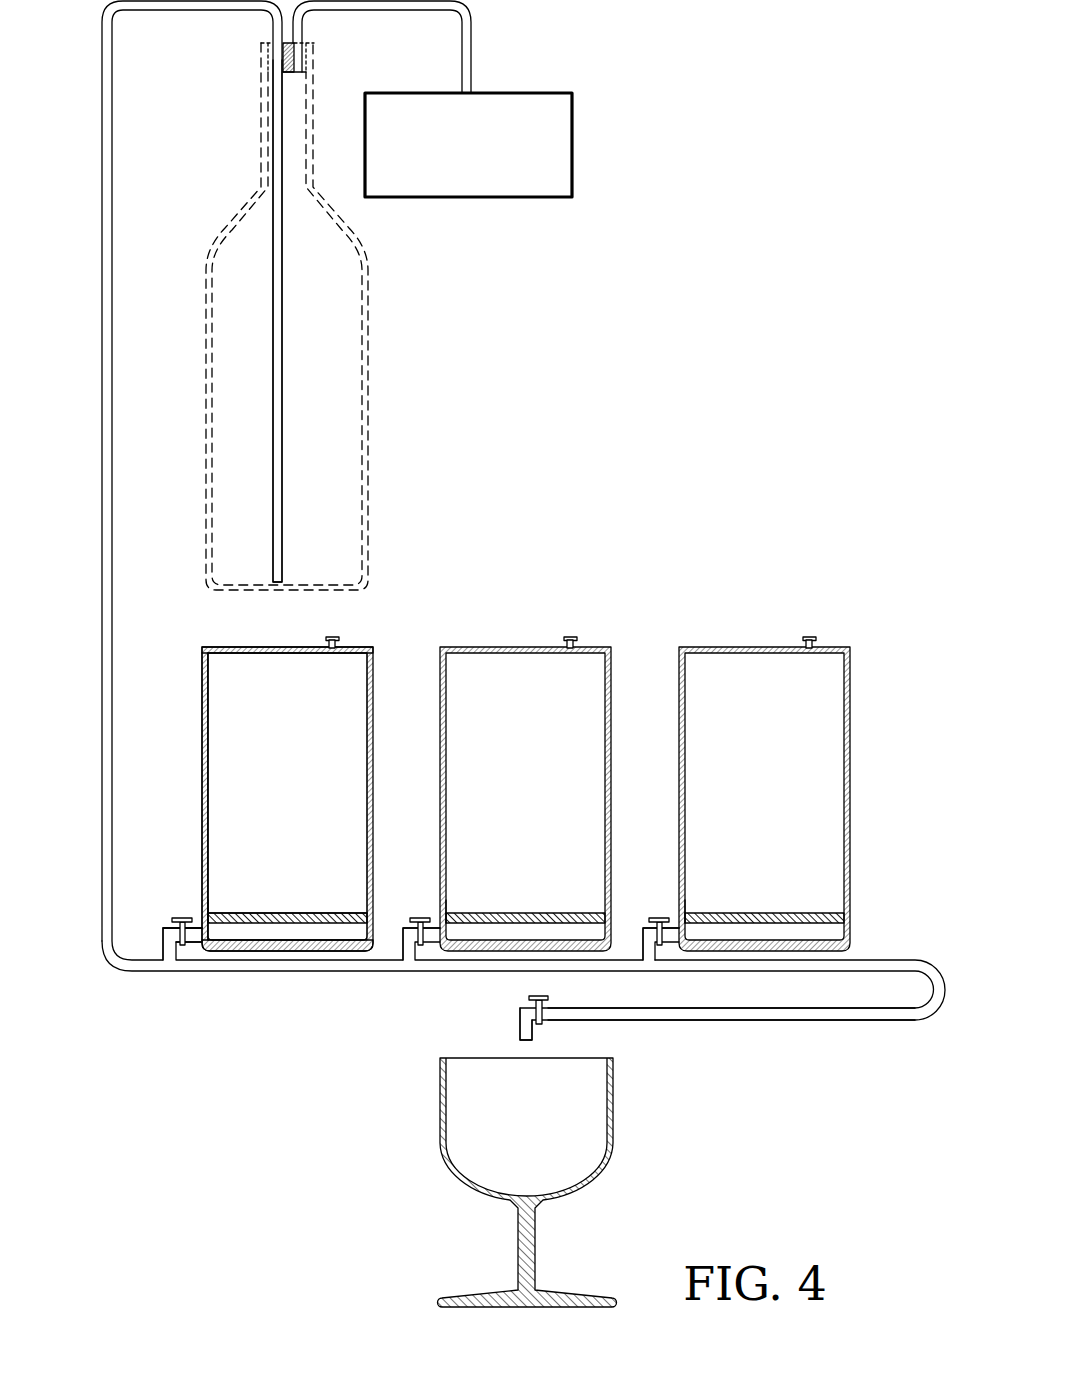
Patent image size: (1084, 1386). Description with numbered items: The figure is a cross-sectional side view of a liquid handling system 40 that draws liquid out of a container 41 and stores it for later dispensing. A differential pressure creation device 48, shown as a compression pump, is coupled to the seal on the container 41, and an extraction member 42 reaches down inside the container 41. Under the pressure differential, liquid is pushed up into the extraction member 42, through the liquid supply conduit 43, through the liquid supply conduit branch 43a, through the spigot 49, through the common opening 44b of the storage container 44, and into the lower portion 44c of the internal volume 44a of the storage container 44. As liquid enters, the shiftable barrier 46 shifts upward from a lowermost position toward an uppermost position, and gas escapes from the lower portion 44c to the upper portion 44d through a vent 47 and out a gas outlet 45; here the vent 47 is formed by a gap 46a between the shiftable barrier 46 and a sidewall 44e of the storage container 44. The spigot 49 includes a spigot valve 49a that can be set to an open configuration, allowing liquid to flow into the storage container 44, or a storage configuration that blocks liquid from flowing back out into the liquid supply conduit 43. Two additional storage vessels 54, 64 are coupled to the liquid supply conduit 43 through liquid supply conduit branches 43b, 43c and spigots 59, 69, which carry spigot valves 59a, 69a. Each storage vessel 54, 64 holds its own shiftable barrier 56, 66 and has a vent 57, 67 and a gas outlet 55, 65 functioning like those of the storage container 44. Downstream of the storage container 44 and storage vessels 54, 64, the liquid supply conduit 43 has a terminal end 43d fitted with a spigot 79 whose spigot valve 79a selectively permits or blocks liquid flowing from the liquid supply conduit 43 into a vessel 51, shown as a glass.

The liquid handling system 40 is at (656, 136).
The container 41 is at (206, 507).
The extraction member 42 is at (273, 425).
The liquid supply conduit 43 is at (112, 177).
The liquid supply conduit branch 43a is at (163, 957).
The liquid supply conduit branch 43b is at (403, 957).
The liquid supply conduit branch 43c is at (643, 957).
The terminal end 43d is at (547, 1019).
The storage container 44 is at (260, 809).
The internal volume 44a is at (212, 693).
The common opening 44b is at (197, 944).
The lower portion 44c is at (278, 942).
The upper portion 44d is at (212, 790).
The sidewall 44e is at (202, 762).
The gas outlet 45 is at (335, 637).
The shiftable barrier 46 is at (313, 911).
The gap 46a is at (214, 911).
The vent 47 is at (210, 911).
The differential pressure creation device 48 is at (496, 51).
The spigot 49 is at (203, 923).
The spigot valve 49a is at (183, 917).
The vessel 51 is at (440, 1110).
The storage vessel 54 is at (440, 720).
The gas outlet 55 is at (573, 637).
The shiftable barrier 56 is at (551, 911).
The vent 57 is at (448, 911).
The spigot 59 is at (441, 923).
The spigot valve 59a is at (421, 917).
The storage vessel 64 is at (679, 720).
The gas outlet 65 is at (811, 637).
The shiftable barrier 66 is at (790, 911).
The vent 67 is at (687, 911).
The spigot 69 is at (680, 923).
The spigot valve 69a is at (660, 917).
The spigot 79 is at (550, 1007).
The spigot valve 79a is at (528, 996).